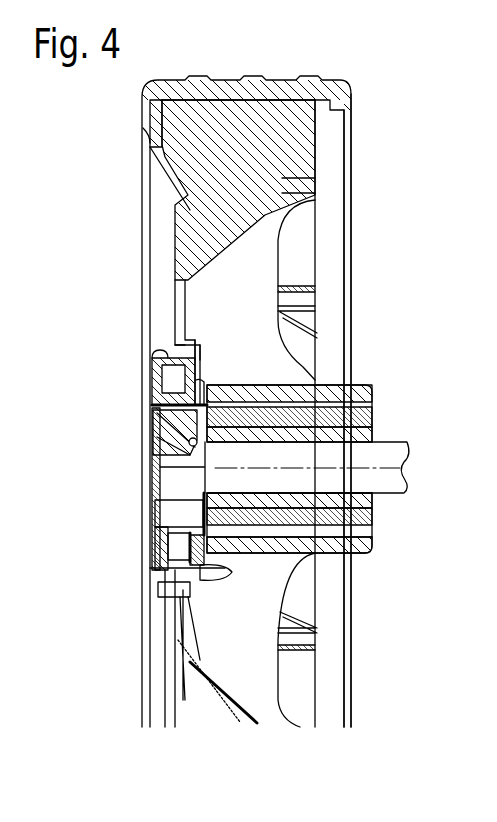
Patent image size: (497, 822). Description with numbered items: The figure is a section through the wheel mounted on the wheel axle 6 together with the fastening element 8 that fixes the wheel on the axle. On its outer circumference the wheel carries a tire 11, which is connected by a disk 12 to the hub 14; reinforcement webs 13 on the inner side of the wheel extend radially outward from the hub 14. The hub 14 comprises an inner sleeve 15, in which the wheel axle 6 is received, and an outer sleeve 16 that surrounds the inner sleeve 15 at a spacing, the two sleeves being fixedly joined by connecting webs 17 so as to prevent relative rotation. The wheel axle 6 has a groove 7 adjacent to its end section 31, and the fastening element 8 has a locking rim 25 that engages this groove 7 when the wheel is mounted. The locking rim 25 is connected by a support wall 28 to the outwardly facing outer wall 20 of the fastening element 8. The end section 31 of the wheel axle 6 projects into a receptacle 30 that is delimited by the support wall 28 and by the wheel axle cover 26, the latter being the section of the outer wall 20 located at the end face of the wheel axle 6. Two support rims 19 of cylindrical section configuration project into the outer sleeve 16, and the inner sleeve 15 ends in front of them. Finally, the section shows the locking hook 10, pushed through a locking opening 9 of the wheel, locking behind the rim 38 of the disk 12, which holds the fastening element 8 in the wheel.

The wheel axle 6 is at (389, 457).
The groove 7 is at (180, 451).
The fastening element 8 is at (148, 387).
The locking openings 9 is at (202, 560).
The locking hooks 10 is at (198, 588).
The tire 11 is at (206, 90).
The disk 12 is at (175, 291).
The reinforcement webs 13 is at (258, 293).
The hub 14 is at (362, 363).
The inner sleeve 15 is at (350, 503).
The outer sleeve 16 is at (365, 540).
The connecting webs 17 is at (337, 420).
The support rims 19 is at (202, 405).
The outer wall 20 is at (143, 502).
The locking rim 25 is at (192, 440).
The wheel axle cover 26 is at (142, 447).
The support wall 28 is at (153, 512).
The receptacle 30 is at (147, 438).
The end section 31 is at (176, 475).
The rim 38 is at (200, 590).